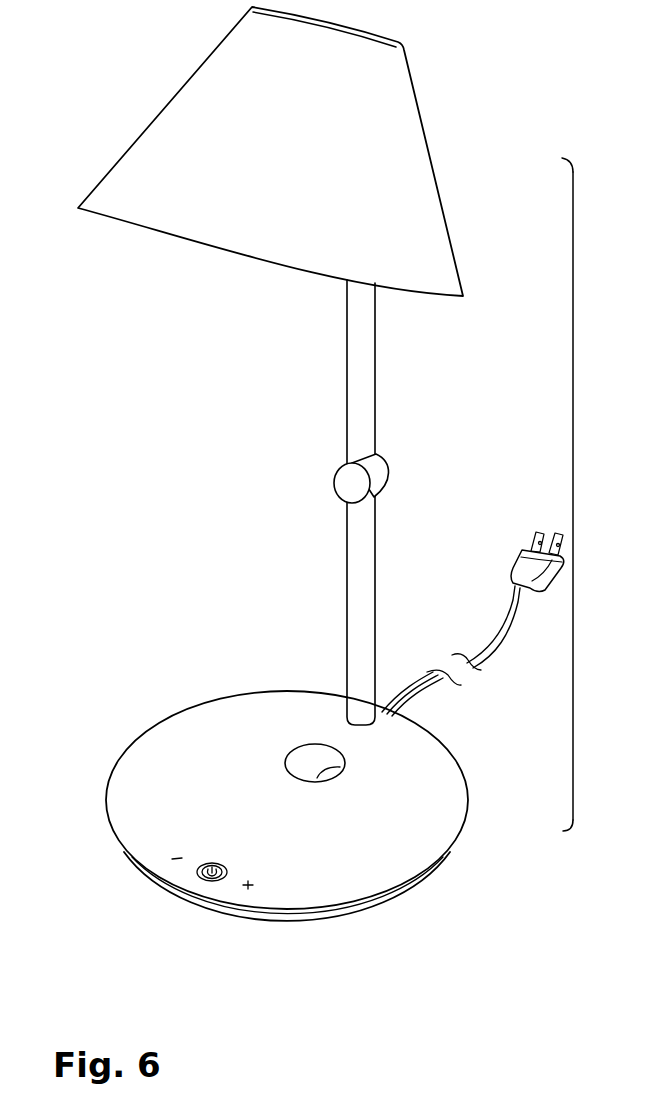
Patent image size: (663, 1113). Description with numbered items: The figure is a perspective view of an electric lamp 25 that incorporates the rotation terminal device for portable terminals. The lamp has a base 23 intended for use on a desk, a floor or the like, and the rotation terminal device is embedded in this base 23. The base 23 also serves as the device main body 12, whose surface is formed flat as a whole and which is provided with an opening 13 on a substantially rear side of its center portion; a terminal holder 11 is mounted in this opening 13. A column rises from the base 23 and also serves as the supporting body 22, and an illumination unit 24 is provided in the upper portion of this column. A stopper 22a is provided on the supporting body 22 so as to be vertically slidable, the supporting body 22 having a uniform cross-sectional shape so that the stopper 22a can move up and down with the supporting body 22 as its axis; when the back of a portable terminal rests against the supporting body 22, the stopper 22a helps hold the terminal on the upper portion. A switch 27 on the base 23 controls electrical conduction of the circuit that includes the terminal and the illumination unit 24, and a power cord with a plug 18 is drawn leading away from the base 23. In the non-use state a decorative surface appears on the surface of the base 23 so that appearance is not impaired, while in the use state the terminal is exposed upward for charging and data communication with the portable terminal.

The terminal holder 11 is at (298, 760).
The device main body 12 is at (372, 767).
The opening 13 is at (342, 772).
The power cord with plug 18 is at (423, 690).
The supporting body 22 is at (357, 393).
The stopper 22a is at (388, 470).
The base 23 is at (115, 773).
The illumination unit 24 is at (441, 193).
The electric lamp 25 is at (573, 493).
The switch 27 is at (187, 880).